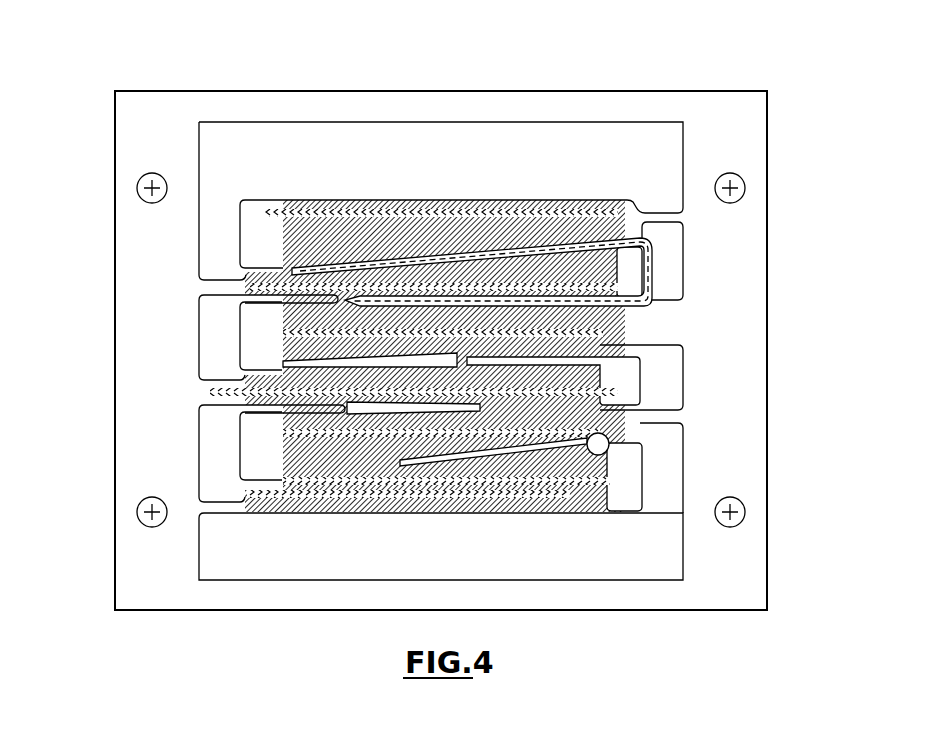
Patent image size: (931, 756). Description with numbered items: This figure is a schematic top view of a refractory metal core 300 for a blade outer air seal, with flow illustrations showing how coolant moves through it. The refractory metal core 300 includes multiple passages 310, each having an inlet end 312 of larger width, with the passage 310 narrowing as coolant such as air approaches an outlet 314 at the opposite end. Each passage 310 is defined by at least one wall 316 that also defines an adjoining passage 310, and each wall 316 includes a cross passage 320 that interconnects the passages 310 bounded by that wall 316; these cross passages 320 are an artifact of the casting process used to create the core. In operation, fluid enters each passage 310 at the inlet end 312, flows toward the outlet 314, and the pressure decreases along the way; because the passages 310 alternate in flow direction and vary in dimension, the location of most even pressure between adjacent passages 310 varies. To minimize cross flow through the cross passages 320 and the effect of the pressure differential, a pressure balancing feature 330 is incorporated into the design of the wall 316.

The refractory metal core 300 is at (375, 62).
The passage 310 is at (336, 228).
The inlet end 312 is at (262, 235).
The outlet 314 is at (205, 288).
The wall 316 is at (448, 262).
The cross passage 320 is at (288, 270).
The pressure balancing feature 330 is at (357, 412).